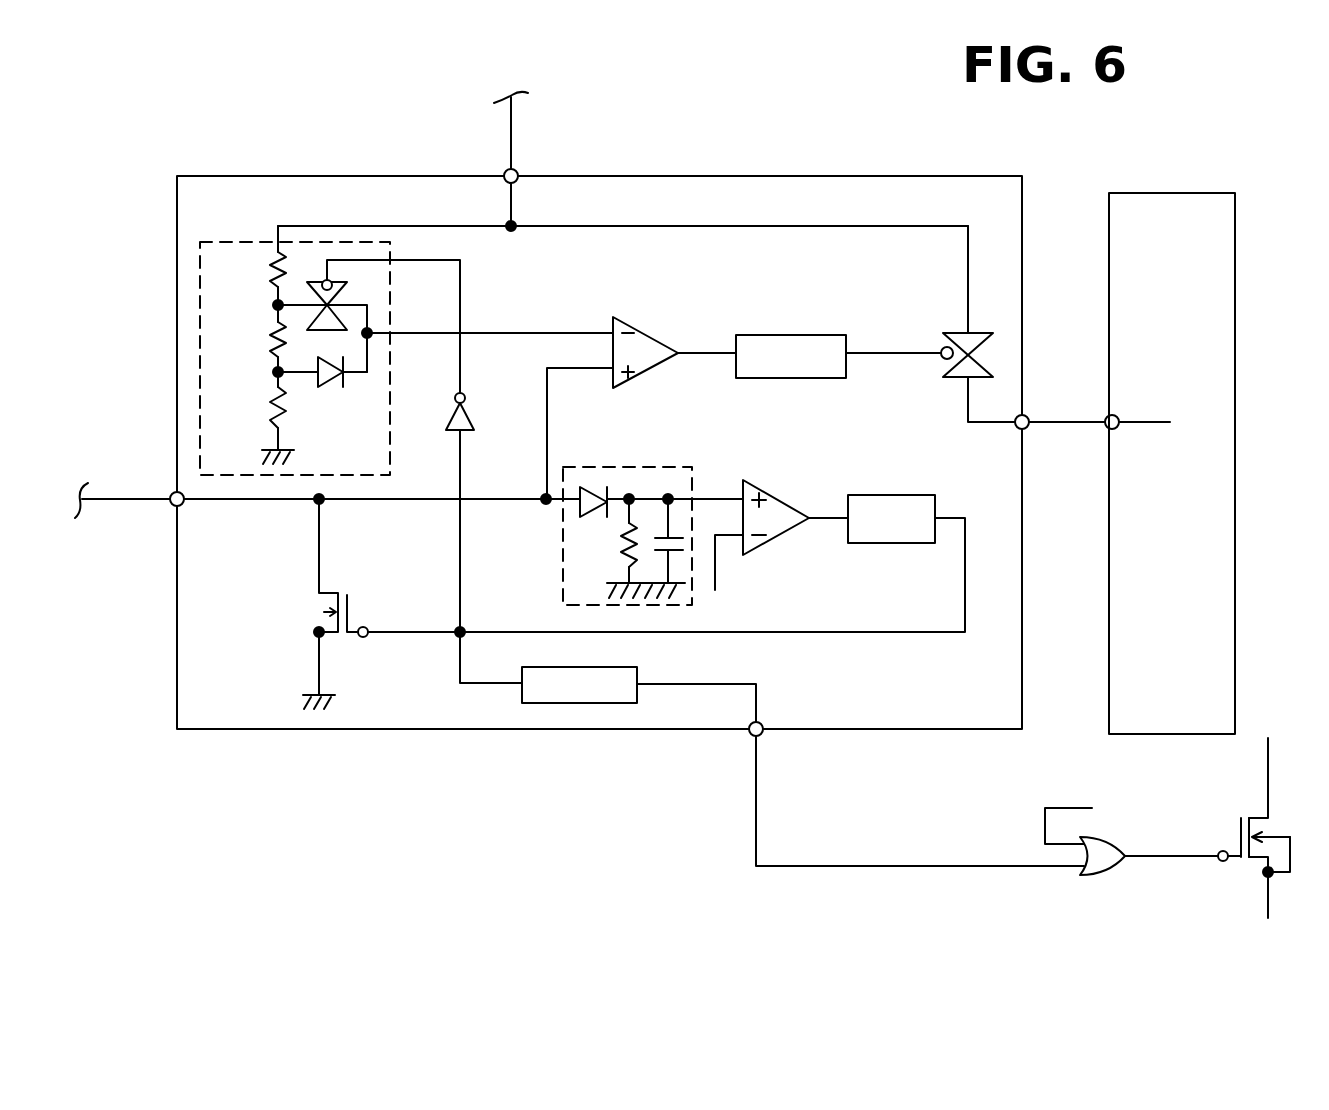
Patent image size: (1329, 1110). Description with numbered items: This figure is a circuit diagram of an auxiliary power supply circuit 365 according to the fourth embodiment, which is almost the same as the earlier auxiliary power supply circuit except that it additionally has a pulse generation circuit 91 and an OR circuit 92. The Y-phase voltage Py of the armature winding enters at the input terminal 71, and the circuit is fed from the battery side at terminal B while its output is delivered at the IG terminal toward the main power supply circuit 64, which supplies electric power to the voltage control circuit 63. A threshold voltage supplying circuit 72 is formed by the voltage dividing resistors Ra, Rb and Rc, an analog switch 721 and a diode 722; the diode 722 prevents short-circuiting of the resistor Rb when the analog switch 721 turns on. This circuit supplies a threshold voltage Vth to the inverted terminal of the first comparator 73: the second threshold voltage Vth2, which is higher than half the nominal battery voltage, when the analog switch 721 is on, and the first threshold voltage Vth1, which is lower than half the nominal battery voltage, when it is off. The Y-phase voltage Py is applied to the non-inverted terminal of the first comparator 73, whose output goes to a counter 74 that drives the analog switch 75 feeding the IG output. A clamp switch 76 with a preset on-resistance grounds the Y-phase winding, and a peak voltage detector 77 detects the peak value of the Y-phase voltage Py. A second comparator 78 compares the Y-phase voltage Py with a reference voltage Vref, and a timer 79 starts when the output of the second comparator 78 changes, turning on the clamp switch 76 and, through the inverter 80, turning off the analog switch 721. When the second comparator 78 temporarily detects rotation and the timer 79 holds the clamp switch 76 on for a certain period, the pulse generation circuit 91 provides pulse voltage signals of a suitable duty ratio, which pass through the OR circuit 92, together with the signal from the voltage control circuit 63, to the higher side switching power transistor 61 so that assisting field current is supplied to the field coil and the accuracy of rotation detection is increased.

The auxiliary power supply circuit 365 is at (443, 729).
The threshold voltage supplying circuit 72 is at (245, 358).
The analog switch 721 is at (347, 297).
The diode 722 is at (335, 383).
The first comparator 73 is at (645, 330).
The counter 74 is at (788, 335).
The analog switch 75 is at (942, 347).
The inverter 80 is at (475, 405).
The input terminal 71 is at (170, 505).
The clamp switch 76 is at (325, 606).
The peak voltage detector 77 is at (563, 527).
The second comparator 78 is at (785, 560).
The timer 79 is at (872, 543).
The pulse generation circuit 91 is at (638, 675).
The OR circuit 92 is at (1125, 866).
The voltage control circuit 63 is at (1102, 807).
The higher side switching power transistor 61 is at (1275, 830).
The main power supply circuit 64 is at (1117, 632).
The voltage dividing resistor Ra is at (268, 276).
The voltage dividing resistor Rb is at (268, 346).
The voltage dividing resistor Rc is at (268, 410).
The battery terminal B is at (504, 161).
The Y-phase voltage Py is at (141, 475).
The ignition terminal IG is at (1092, 407).
The threshold voltage Vth is at (565, 333).
The first threshold voltage Vth1 is at (367, 360).
The second threshold voltage Vth2 is at (367, 317).
The reference voltage Vref is at (722, 609).